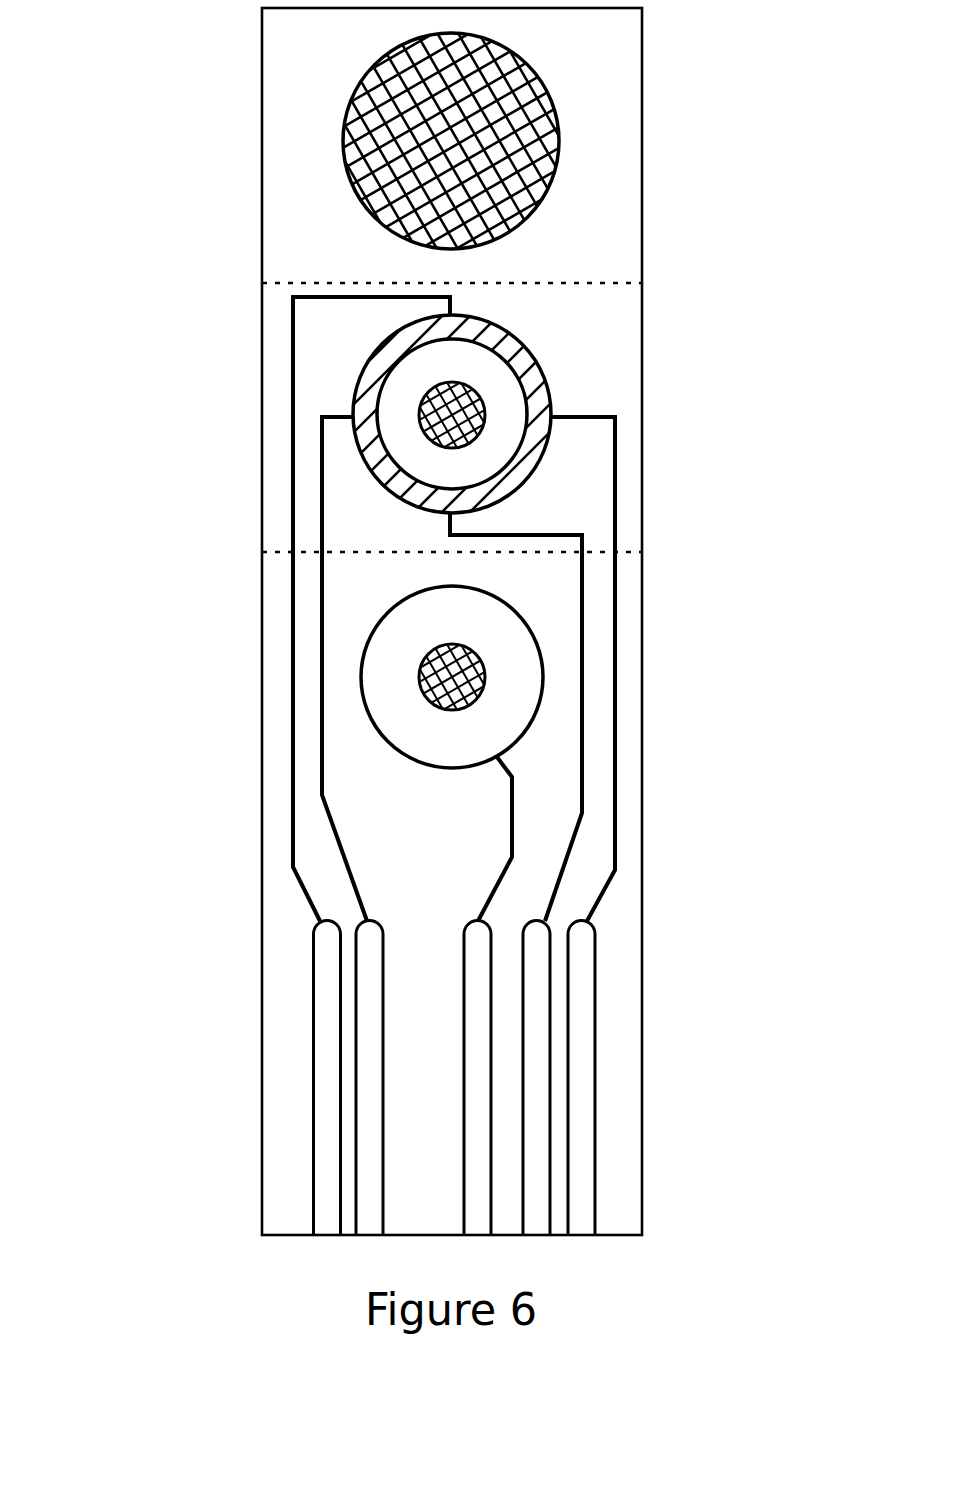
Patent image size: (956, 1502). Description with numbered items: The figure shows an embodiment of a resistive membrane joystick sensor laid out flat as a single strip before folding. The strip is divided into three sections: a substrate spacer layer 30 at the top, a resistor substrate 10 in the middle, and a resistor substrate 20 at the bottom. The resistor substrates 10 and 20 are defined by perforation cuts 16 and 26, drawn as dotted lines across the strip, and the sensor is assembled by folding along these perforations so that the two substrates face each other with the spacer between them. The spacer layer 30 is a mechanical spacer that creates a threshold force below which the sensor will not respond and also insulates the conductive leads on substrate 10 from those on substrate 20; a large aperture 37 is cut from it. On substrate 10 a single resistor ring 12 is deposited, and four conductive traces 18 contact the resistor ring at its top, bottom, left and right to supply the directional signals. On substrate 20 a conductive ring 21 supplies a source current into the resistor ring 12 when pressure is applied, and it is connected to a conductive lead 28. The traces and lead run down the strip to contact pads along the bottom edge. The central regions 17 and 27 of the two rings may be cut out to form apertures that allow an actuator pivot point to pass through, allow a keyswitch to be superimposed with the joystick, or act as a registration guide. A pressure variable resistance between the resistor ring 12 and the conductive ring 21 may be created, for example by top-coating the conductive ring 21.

The aperture 37 is at (555, 108).
The substrate spacer layer 30 is at (642, 218).
The perforation cut 16 is at (323, 282).
The resistor ring 12 is at (548, 386).
The central region 17 is at (427, 393).
The resistor substrate 10 is at (642, 485).
The perforation cut 26 is at (280, 550).
The central region 27 is at (427, 648).
The conductive ring 21 is at (537, 655).
The resistor substrate 20 is at (642, 755).
The conductive lead 28 is at (488, 1060).
The conductive traces 18 is at (353, 1120).